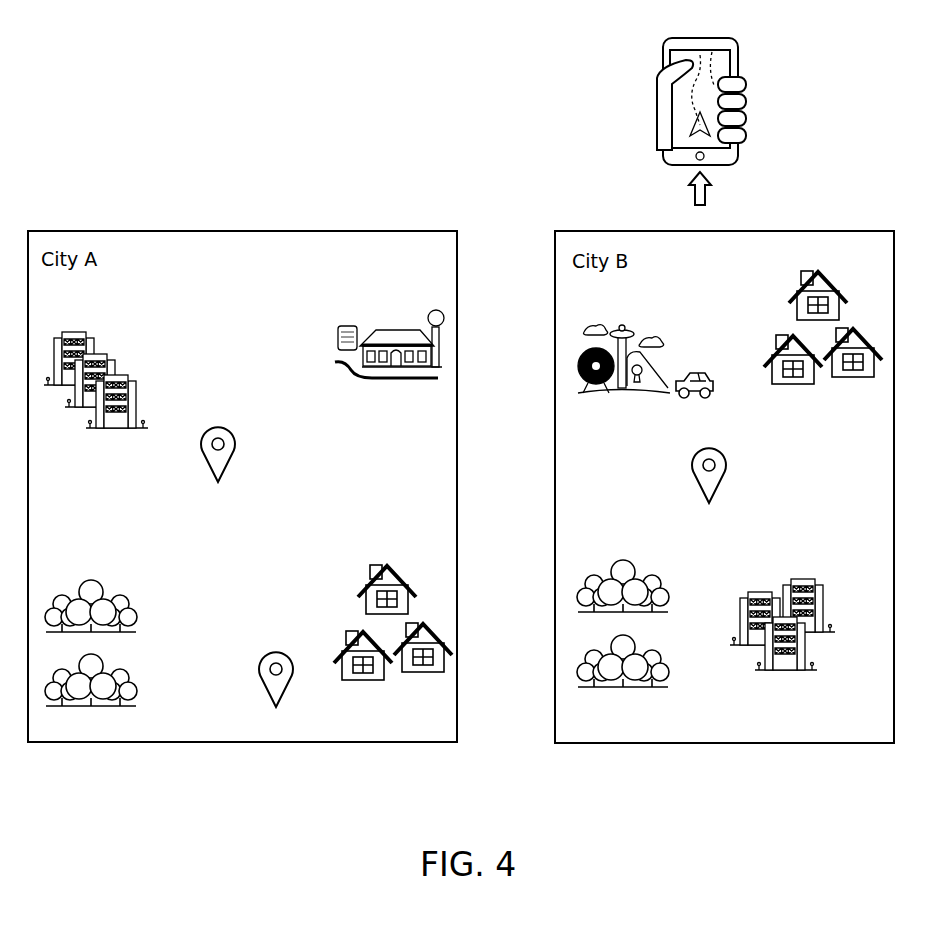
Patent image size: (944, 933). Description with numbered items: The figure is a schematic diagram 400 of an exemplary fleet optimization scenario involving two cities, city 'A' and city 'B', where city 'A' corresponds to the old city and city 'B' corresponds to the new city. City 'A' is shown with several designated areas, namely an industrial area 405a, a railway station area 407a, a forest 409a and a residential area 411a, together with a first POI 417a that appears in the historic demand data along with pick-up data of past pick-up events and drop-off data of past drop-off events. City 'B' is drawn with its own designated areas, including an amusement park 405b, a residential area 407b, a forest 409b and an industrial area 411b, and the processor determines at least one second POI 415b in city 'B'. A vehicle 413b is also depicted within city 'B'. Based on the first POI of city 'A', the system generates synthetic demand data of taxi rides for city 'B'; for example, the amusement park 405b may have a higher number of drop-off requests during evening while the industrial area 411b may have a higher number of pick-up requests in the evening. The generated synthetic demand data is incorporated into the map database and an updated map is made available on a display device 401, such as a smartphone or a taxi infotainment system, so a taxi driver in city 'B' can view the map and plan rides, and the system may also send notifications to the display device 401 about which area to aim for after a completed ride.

The schematic diagram 400 is at (180, 36).
The display device 401 is at (746, 105).
The industrial area 405a is at (108, 428).
The amusement park 405b is at (620, 390).
The railway station area 407a is at (340, 368).
The residential area 407b is at (800, 310).
The forest 409a is at (90, 580).
The forest 409b is at (620, 556).
The residential area 411a is at (387, 560).
The industrial area 411b is at (800, 577).
The vehicle in City B 413b is at (690, 378).
The second POI 415b is at (229, 461).
The first POI 417a is at (276, 651).